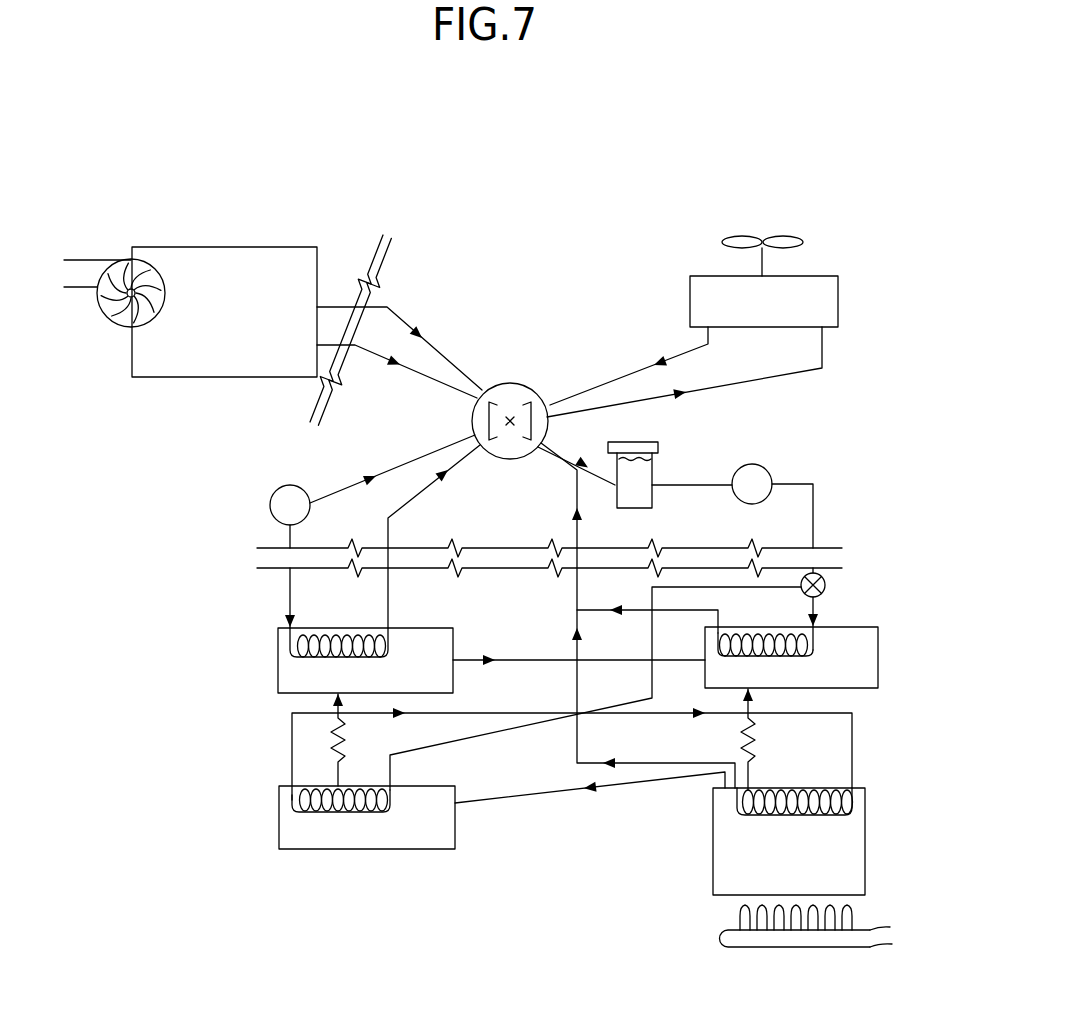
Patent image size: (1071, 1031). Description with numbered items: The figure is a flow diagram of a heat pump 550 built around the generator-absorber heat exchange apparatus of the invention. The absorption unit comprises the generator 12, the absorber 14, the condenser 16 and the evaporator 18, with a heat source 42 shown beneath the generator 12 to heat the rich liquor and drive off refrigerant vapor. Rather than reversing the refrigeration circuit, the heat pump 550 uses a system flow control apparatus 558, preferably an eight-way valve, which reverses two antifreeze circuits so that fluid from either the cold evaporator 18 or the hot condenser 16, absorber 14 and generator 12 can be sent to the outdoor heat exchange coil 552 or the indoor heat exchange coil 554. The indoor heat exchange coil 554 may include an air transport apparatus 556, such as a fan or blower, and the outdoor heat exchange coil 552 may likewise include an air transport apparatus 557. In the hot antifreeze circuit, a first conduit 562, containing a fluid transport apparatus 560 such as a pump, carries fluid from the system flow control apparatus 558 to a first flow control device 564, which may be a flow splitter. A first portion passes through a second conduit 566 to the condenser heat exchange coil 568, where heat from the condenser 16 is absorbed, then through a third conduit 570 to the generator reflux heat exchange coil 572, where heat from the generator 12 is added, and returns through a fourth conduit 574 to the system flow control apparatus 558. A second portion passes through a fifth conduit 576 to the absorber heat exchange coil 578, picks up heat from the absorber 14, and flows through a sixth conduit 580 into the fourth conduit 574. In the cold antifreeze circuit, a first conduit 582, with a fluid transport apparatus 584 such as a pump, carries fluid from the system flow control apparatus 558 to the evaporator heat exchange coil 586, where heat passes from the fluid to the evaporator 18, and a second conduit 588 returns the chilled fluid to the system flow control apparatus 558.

The heat pump 550 is at (510, 119).
The outdoor heat exchange coil 552 is at (822, 276).
The indoor heat exchange coil 554 is at (249, 247).
The air transport apparatus 556 is at (112, 330).
The air transport apparatus 557 is at (783, 238).
The system flow control apparatus 558 is at (536, 386).
The fluid transport apparatus 560 is at (768, 466).
The first conduit 562 is at (697, 484).
The first flow control device 564 is at (826, 586).
The second conduit 566 is at (652, 628).
The condenser heat exchange coil 568 is at (290, 800).
The third conduit 570 is at (288, 745).
The generator reflux heat exchange coil 572 is at (858, 800).
The fourth conduit 574 is at (580, 743).
The fifth conduit 576 is at (818, 600).
The absorber heat exchange coil 578 is at (813, 650).
The sixth conduit 580 is at (675, 610).
The first conduit 582 is at (388, 468).
The fluid transport apparatus 584 is at (270, 504).
The evaporator heat exchange coil 586 is at (290, 648).
The second conduit 588 is at (418, 502).
The generator 12 is at (712, 872).
The absorber 14 is at (868, 692).
The condenser 16 is at (385, 851).
The evaporator 18 is at (430, 625).
The heat source 42 is at (805, 947).